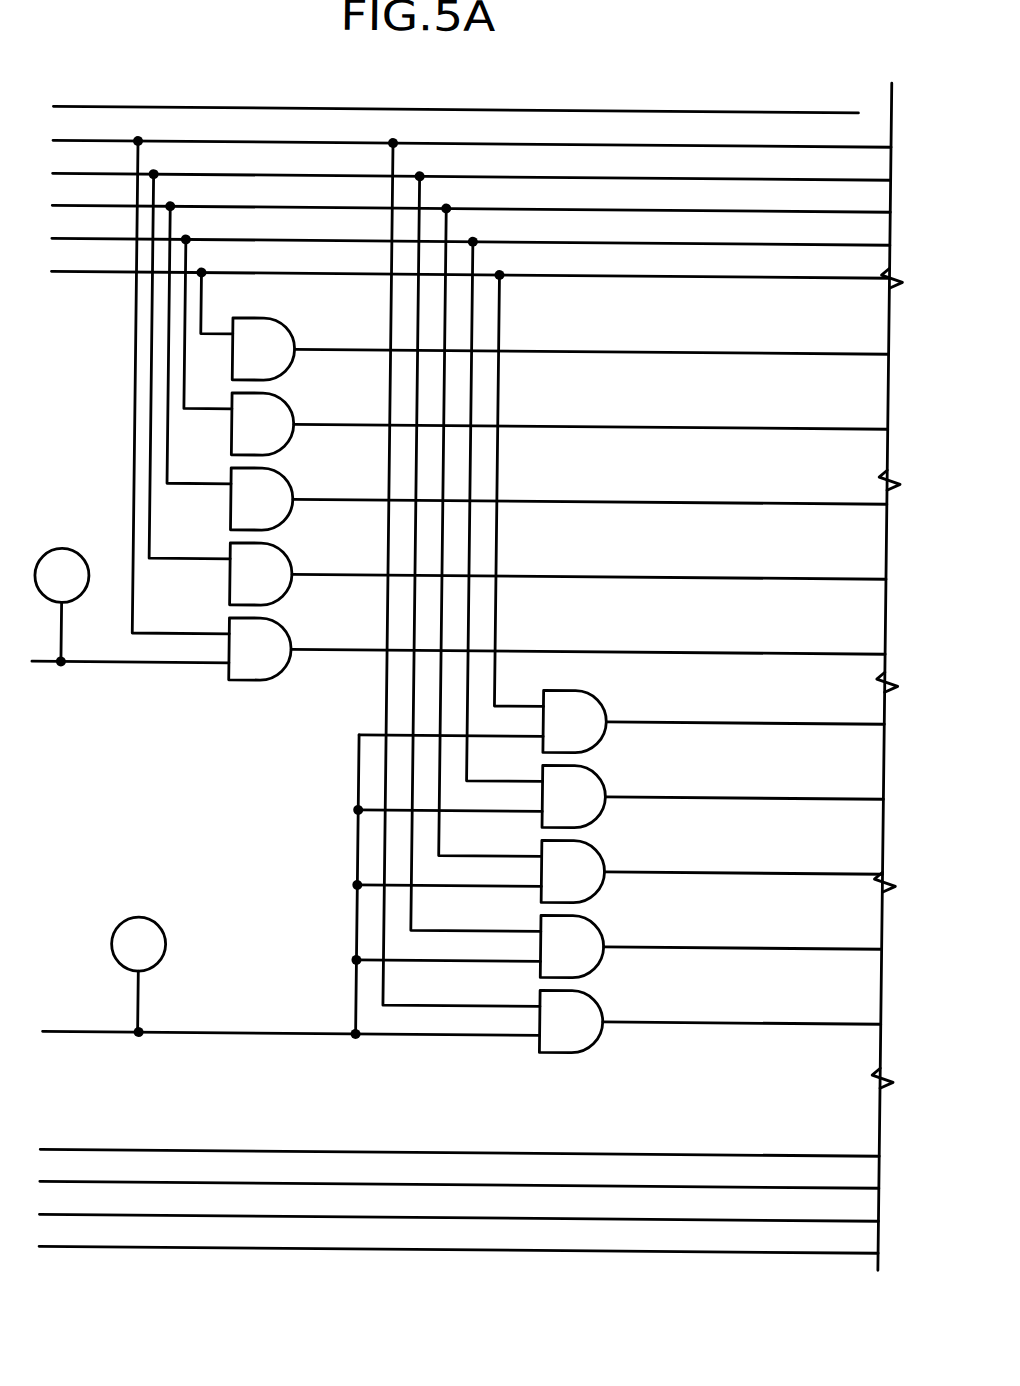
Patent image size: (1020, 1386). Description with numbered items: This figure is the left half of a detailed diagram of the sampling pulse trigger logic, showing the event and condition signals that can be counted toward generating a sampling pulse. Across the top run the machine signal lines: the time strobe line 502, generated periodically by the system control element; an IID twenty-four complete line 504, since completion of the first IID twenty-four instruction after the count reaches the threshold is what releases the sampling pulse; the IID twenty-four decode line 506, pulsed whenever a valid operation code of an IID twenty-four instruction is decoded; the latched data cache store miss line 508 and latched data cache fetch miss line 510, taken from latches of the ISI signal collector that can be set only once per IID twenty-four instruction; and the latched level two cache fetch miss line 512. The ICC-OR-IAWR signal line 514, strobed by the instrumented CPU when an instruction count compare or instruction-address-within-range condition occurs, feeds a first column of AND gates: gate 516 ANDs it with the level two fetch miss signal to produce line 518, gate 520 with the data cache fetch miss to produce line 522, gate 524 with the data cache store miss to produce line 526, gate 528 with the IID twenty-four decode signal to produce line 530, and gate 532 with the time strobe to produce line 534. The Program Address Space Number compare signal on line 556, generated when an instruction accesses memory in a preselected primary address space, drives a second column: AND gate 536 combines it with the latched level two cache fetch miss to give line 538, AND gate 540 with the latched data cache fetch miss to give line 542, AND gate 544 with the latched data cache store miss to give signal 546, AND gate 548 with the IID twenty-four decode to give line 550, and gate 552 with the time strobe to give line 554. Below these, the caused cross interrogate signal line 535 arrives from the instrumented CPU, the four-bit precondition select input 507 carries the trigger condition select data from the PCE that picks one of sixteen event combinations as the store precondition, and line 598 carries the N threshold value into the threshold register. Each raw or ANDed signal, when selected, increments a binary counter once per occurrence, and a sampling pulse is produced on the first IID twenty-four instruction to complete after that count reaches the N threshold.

The time strobe signal line 502 is at (454, 141).
The IID 24 complete line 504 is at (618, 108).
The IID 24 decode signal line 506 is at (716, 174).
The precondition select input 507 is at (628, 1181).
The latched data cache store miss signal line 508 is at (782, 207).
The latched data cache fetch miss signal line 510 is at (712, 240).
The latched level 2 cache fetch miss signal line 512 is at (652, 273).
The ICC-OR-IAWR signal line 514 is at (106, 662).
The AND gate 516 is at (263, 349).
The latched L2 fetch miss AND ICC-OR-IAWR signal line 518 is at (650, 349).
The AND gate 520 is at (262, 424).
The latched data cache fetch miss AND ICC-OR-IAWR signal line 522 is at (704, 424).
The AND gate 524 is at (261, 499).
The latched data cache store miss AND ICC-OR-IAWR signal line 526 is at (715, 499).
The AND gate 528 is at (261, 574).
The IID 24 decode AND ICC-OR-IAWR signal line 530 is at (733, 574).
The AND gate 532 is at (260, 649).
The time strobe AND ICC-OR-IAWR signal line 534 is at (784, 649).
The CCI signal line 535 is at (492, 1149).
The AND gate 536 is at (575, 721).
The PASN compare AND latched L2 cache fetch miss signal line 538 is at (797, 718).
The AND gate 540 is at (574, 796).
The PASN compare AND latched data cache fetch miss signal line 542 is at (838, 794).
The AND gate 544 is at (573, 871).
The PASN compare AND latched data cache store miss signal 546 is at (786, 869).
The AND gate 548 is at (572, 946).
The PASN compare AND IID 24 decode signal line 550 is at (823, 944).
The AND gate 552 is at (571, 1021).
The PASN compare AND time strobe signal line 554 is at (721, 1018).
The PASN compare signal line 556 is at (300, 1032).
The threshold value line 598 is at (520, 1215).